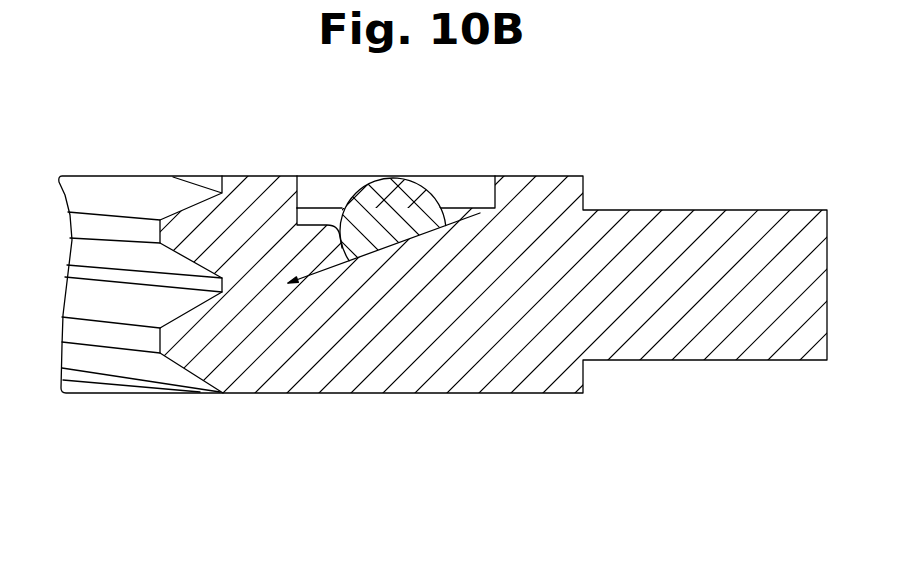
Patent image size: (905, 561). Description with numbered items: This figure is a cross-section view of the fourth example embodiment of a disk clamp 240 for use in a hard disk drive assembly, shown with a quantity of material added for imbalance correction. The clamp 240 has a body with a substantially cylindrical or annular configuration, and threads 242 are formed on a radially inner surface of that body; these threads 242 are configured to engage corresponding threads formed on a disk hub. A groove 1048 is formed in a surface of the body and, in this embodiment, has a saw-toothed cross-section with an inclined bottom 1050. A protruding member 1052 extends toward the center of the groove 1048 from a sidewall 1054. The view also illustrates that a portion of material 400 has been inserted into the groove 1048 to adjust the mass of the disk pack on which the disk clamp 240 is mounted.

The disk clamp 240 is at (257, 421).
The threads 242 is at (135, 228).
The portion of material 400 is at (385, 208).
The groove 1048 is at (462, 190).
The inclined bottom 1050 is at (378, 247).
The protruding member 1052 is at (333, 243).
The sidewall 1054 is at (294, 190).